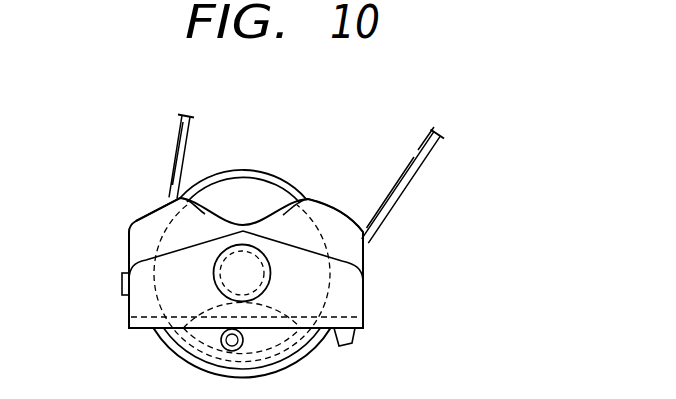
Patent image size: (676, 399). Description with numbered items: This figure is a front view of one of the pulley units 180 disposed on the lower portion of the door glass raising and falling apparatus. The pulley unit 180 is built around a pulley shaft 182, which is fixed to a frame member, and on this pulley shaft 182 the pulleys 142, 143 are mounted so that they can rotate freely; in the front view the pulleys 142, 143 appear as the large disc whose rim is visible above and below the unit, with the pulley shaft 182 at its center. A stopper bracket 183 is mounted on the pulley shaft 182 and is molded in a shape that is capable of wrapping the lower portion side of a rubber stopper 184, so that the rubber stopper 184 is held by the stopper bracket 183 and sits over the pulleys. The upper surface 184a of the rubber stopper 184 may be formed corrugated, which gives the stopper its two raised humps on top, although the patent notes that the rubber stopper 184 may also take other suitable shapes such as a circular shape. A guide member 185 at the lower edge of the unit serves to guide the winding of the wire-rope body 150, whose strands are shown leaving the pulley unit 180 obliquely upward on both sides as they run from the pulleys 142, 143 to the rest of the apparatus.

The pulley 142 is at (236, 187).
The pulley 143 is at (243, 190).
The wire-rope body 150 is at (400, 197).
The pulley unit 180 is at (484, 197).
The pulley shaft 182 is at (253, 263).
The stopper bracket 183 is at (122, 313).
The rubber stopper 184 is at (128, 243).
The upper surface 184a is at (153, 193).
The guide member 185 is at (355, 338).